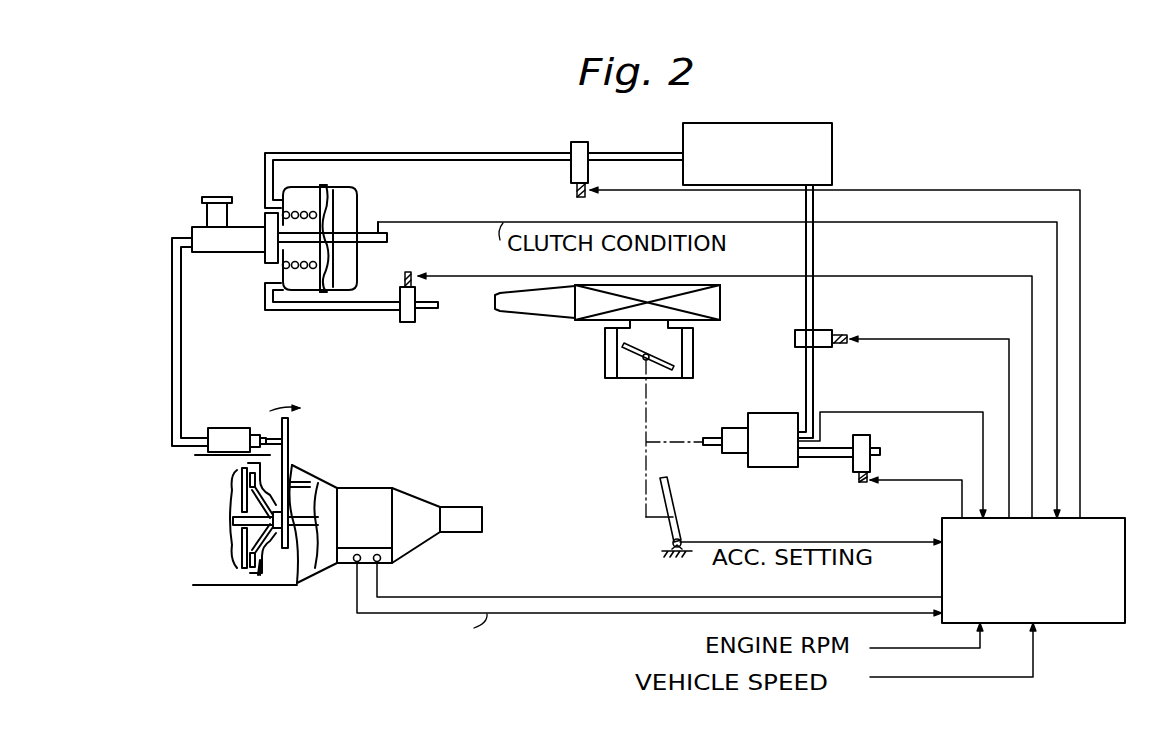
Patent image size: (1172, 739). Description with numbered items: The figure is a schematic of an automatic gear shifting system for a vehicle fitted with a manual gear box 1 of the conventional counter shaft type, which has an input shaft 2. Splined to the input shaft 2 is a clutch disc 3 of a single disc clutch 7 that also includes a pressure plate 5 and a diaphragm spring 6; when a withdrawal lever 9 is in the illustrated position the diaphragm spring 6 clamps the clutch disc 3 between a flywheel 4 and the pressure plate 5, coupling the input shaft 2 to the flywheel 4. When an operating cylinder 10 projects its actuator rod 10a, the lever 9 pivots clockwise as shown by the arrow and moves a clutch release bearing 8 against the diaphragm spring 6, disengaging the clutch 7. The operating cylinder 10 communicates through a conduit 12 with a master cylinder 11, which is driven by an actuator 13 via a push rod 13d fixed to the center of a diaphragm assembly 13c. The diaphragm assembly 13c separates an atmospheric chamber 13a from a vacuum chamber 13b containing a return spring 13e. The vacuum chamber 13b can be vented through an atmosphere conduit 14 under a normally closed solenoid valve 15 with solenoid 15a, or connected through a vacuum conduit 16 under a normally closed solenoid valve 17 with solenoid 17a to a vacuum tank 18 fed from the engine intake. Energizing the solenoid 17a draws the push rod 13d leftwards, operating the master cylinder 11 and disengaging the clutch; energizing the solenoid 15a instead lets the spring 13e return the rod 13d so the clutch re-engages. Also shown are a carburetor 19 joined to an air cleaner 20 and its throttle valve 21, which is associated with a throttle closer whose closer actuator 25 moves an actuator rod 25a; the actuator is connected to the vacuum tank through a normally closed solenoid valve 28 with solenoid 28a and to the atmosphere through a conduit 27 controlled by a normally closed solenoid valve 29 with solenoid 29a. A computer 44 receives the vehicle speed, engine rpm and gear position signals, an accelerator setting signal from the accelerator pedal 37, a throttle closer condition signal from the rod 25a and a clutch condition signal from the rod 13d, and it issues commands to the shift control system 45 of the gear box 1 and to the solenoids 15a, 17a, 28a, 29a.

The manual gear box 1 is at (372, 488).
The input shaft 2 is at (232, 522).
The clutch disc 3 is at (238, 533).
The flywheel 4 is at (243, 560).
The pressure plate 5 is at (248, 578).
The diaphragm spring 6 is at (262, 580).
The clutch 7 is at (231, 467).
The clutch release bearing 8 is at (284, 580).
The withdrawal lever 9 is at (289, 452).
The operating cylinder 10 is at (211, 428).
The actuator rod 10a is at (268, 432).
The master cylinder 11 is at (201, 253).
The conduit 12 is at (176, 344).
The actuator 13 is at (360, 187).
The atmospheric chamber 13a is at (325, 192).
The vacuum chamber 13b is at (297, 190).
The diaphragm assembly 13c is at (355, 271).
The push rod 13d is at (268, 256).
The diaphragm return spring 13e is at (290, 290).
The atmosphere conduit 14 is at (352, 306).
The solenoid valve 15 is at (407, 323).
The solenoid 15a is at (411, 272).
The vacuum conduit 16 is at (486, 152).
The solenoid valve 17 is at (581, 142).
The solenoid 17a is at (576, 192).
The vacuum tank 18 is at (838, 116).
The carburetor 19 is at (694, 353).
The air cleaner 20 is at (721, 308).
The throttle valve 21 is at (633, 353).
The closer actuator 25 is at (772, 413).
The actuator rod 25a is at (707, 437).
The conduit 27 is at (816, 458).
The solenoid valve 28 is at (828, 330).
The solenoid 28a is at (850, 336).
The solenoid valve 29 is at (871, 442).
The solenoid 29a is at (864, 483).
The accelerator pedal 37 is at (674, 498).
The computer 44 is at (1087, 625).
The shift control system 45 is at (382, 565).